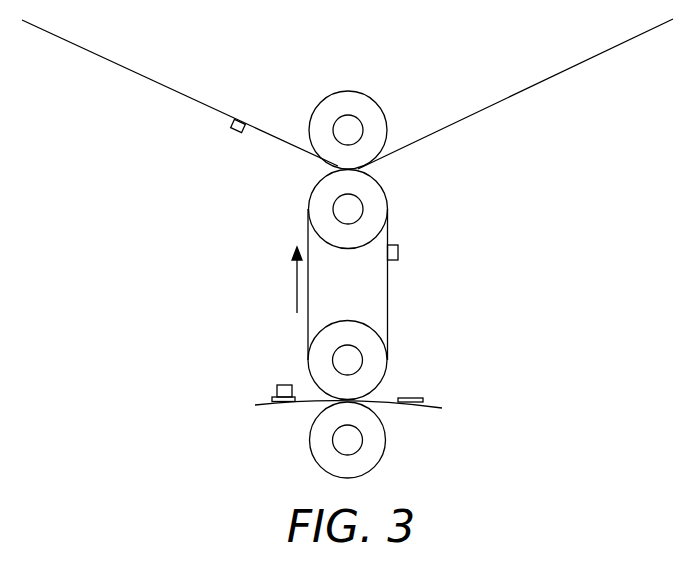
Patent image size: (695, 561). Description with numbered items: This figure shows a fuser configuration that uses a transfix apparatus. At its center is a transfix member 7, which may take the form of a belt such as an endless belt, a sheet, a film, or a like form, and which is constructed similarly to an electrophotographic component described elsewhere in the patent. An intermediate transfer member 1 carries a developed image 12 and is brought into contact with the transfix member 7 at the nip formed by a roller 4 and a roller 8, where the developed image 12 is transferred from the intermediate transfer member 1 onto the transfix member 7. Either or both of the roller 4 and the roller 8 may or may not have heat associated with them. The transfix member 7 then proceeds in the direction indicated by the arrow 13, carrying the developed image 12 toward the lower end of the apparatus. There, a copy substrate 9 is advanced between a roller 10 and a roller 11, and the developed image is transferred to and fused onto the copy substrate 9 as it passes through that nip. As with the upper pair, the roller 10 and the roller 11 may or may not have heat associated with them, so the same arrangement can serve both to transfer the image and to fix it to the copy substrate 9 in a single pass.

The intermediate transfer member 1 is at (178, 90).
The roller 4 is at (358, 92).
The transfix member 7 is at (388, 307).
The roller 8 is at (377, 202).
The copy substrate 9 is at (410, 396).
The roller 10 is at (378, 352).
The roller 11 is at (386, 437).
The developed image 12 is at (239, 137).
The arrow 13 is at (295, 283).